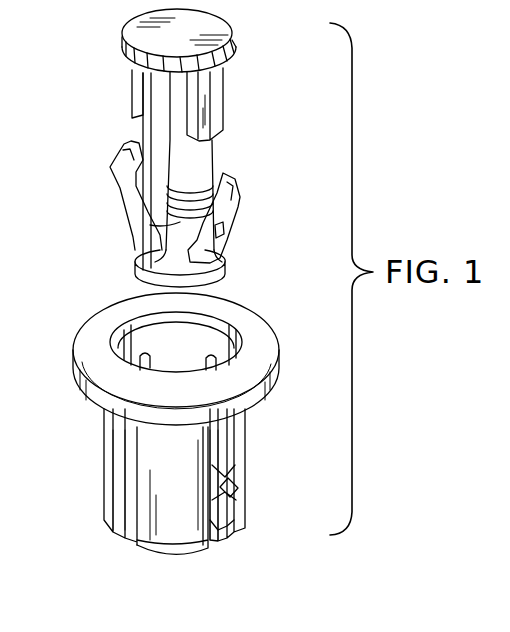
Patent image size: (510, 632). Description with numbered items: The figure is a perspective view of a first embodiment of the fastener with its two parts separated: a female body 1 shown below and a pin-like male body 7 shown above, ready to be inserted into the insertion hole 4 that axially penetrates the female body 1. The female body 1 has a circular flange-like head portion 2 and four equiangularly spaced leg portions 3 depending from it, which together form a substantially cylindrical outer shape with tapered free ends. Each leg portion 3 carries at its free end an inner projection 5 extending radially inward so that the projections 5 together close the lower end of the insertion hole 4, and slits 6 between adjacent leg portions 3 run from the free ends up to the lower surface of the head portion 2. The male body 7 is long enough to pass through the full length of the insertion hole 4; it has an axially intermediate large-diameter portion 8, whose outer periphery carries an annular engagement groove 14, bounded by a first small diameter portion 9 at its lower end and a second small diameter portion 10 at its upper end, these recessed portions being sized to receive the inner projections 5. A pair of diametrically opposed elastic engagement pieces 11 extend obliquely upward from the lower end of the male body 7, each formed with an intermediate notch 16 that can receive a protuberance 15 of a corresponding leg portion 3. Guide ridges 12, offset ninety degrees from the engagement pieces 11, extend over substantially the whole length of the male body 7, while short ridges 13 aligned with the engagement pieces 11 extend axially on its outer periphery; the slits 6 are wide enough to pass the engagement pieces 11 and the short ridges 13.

The female body 1 is at (88, 418).
The head portion 2 is at (278, 360).
The leg portions 3 is at (176, 537).
The insertion hole 4 is at (200, 338).
The inner projection 5 is at (218, 527).
The slits 6 is at (225, 448).
The male body 7 is at (242, 52).
The large-diameter portion 8 is at (150, 223).
The first small diameter portion 9 is at (167, 248).
The second small diameter portion 10 is at (188, 165).
The elastic engagement pieces 11 is at (121, 178).
The guide ridges 12 is at (143, 105).
The short ridges 13 is at (138, 83).
The annular engagement groove 14 is at (195, 203).
The protuberance 15 is at (218, 484).
The notch 16 is at (230, 232).